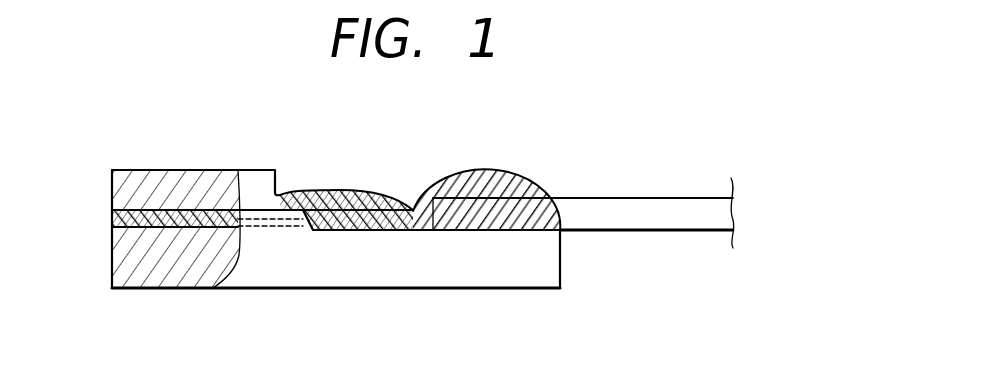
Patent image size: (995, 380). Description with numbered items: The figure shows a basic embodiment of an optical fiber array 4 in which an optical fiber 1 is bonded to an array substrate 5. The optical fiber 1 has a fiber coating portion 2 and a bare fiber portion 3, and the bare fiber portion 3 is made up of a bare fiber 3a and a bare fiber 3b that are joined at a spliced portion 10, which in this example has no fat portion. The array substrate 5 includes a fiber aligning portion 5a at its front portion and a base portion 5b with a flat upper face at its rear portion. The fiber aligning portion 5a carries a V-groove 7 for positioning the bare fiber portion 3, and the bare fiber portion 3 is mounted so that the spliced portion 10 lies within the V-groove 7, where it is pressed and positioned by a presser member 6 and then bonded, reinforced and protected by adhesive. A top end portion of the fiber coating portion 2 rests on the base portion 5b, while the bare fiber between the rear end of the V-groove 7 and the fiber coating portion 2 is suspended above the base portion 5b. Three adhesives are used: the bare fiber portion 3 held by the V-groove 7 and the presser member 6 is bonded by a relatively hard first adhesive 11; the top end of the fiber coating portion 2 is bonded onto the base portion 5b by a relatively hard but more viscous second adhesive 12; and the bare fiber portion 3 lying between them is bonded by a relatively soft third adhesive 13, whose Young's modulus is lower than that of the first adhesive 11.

The optical fiber 1 is at (577, 198).
The fiber coating portion 2 is at (665, 210).
The bare fiber portion 3 is at (218, 98).
The bare fiber 3a is at (327, 190).
The bare fiber 3b is at (178, 212).
The optical fiber array 4 is at (190, 300).
The array substrate 5 is at (320, 273).
The fiber aligning portion 5a is at (143, 278).
The base portion 5b is at (425, 232).
The presser member 6 is at (147, 185).
The V-groove 7 is at (122, 229).
The spliced portion 10 is at (213, 228).
The first adhesive 11 is at (120, 214).
The second adhesive 12 is at (470, 183).
The third adhesive 13 is at (362, 191).